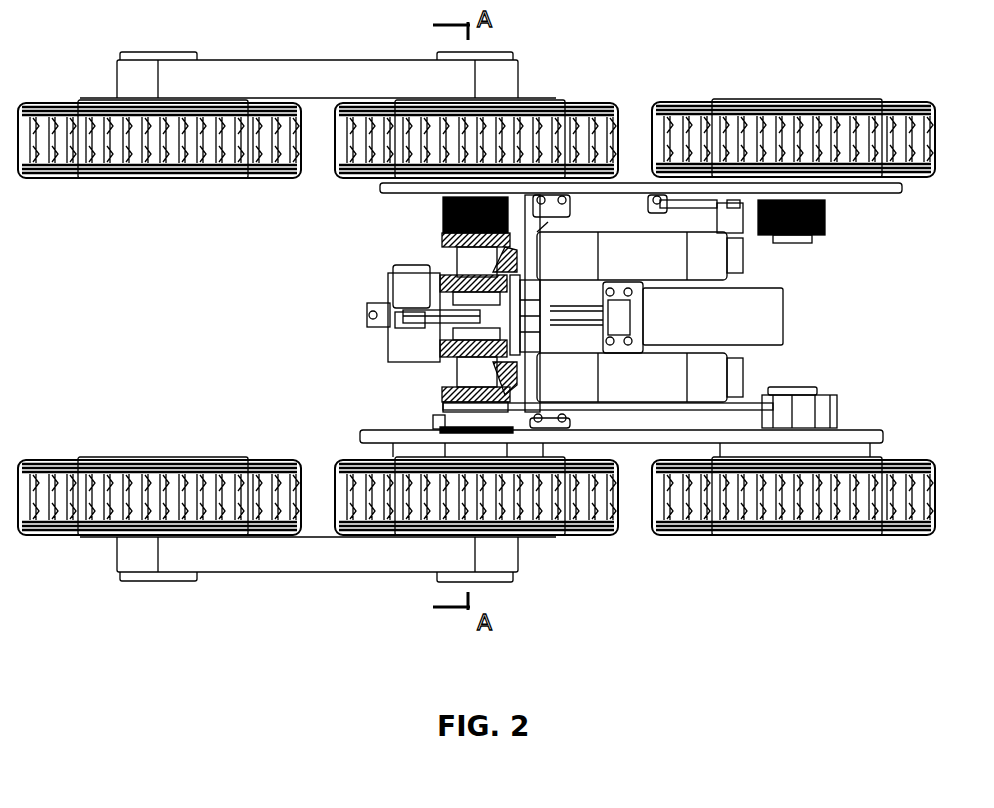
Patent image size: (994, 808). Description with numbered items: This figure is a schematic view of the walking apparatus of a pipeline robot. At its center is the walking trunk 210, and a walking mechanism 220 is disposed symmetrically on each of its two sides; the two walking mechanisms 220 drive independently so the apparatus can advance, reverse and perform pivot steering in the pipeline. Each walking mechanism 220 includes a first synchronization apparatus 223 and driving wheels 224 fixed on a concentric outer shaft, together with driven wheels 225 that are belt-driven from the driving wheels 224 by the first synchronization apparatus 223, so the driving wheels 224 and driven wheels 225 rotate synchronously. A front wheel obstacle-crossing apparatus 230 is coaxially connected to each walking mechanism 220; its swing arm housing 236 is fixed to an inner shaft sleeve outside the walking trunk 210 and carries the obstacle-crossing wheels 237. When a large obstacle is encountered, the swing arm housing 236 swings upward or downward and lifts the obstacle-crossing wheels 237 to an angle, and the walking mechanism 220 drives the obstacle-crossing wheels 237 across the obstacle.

The walking trunk 210 is at (884, 193).
The walking mechanism 220 is at (717, 263).
The first synchronization apparatus 223 is at (443, 215).
The driving wheel 224 is at (583, 107).
The driven wheel 225 is at (763, 113).
The front wheel obstacle-crossing apparatus 230 is at (767, 310).
The swing arm housing 236 is at (302, 77).
The obstacle-crossing wheel 237 is at (48, 162).